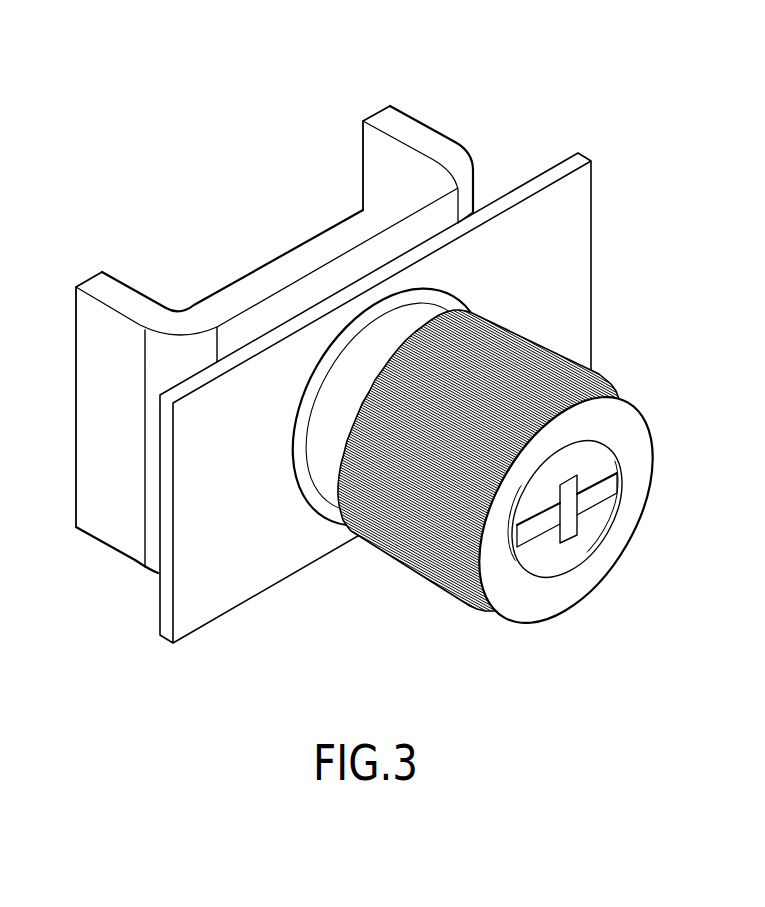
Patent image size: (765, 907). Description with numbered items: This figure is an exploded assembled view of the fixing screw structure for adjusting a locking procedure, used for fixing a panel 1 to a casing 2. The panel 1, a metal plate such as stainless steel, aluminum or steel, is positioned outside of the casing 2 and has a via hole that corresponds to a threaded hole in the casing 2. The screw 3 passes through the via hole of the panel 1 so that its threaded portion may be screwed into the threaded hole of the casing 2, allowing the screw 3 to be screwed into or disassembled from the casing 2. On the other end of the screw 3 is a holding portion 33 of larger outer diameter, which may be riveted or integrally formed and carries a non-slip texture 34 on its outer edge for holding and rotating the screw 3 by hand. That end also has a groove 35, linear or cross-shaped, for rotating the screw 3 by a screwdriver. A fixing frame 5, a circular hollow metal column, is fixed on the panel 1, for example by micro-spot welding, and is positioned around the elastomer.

The panel 1 is at (521, 170).
The casing 2 is at (376, 97).
The screw 3 is at (513, 484).
The fixing frame 5 is at (311, 525).
The holding portion 33 is at (541, 604).
The non-slip texture 34 is at (408, 553).
The groove 35 is at (580, 524).